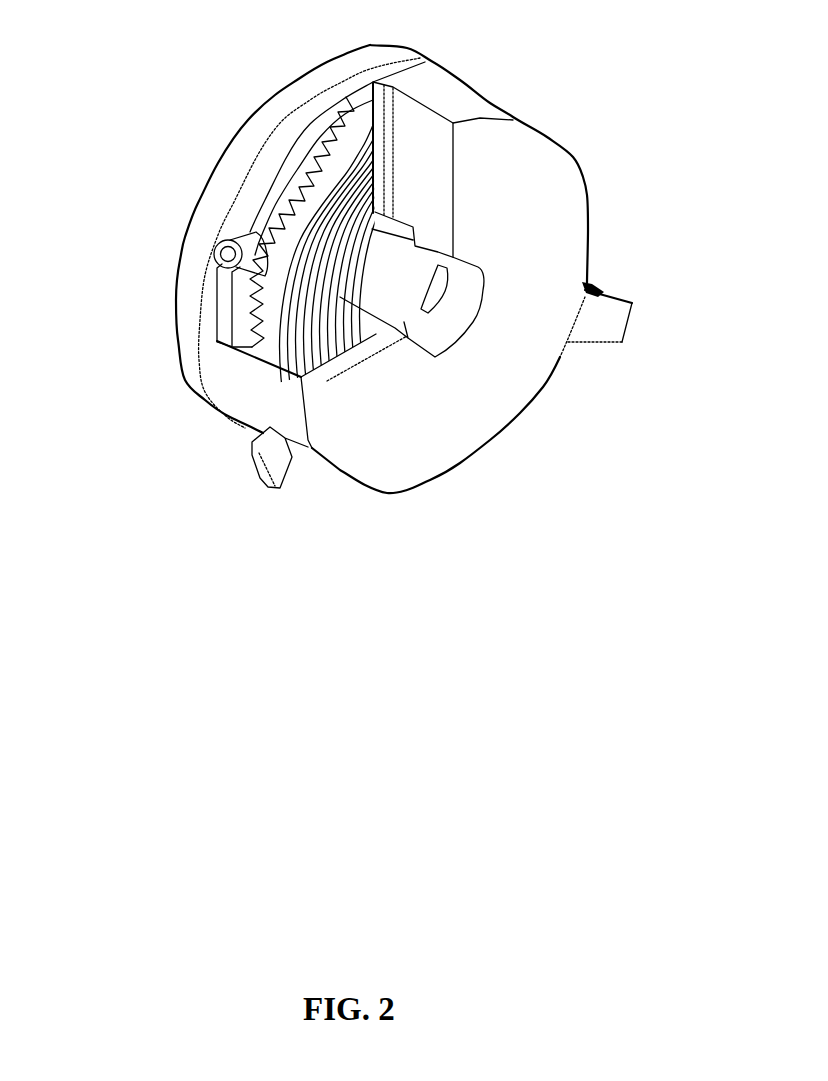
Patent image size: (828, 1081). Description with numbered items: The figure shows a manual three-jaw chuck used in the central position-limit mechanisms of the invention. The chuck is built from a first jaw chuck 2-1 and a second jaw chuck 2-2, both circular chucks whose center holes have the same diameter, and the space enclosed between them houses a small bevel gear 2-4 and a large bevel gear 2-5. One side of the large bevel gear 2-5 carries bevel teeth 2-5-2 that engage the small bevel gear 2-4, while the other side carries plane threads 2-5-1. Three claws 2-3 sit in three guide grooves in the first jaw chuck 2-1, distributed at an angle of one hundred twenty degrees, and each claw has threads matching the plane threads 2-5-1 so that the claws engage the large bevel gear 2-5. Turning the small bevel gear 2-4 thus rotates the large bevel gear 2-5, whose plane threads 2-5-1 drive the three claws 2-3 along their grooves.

The first jaw chuck 2-1 is at (533, 155).
The second jaw chuck 2-2 is at (303, 105).
The claws 2-3 is at (274, 464).
The small bevel gear 2-4 is at (258, 230).
The large bevel gear 2-5 is at (272, 290).
The plane threads 2-5-1 is at (275, 388).
The bevel teeth 2-5-2 is at (255, 325).